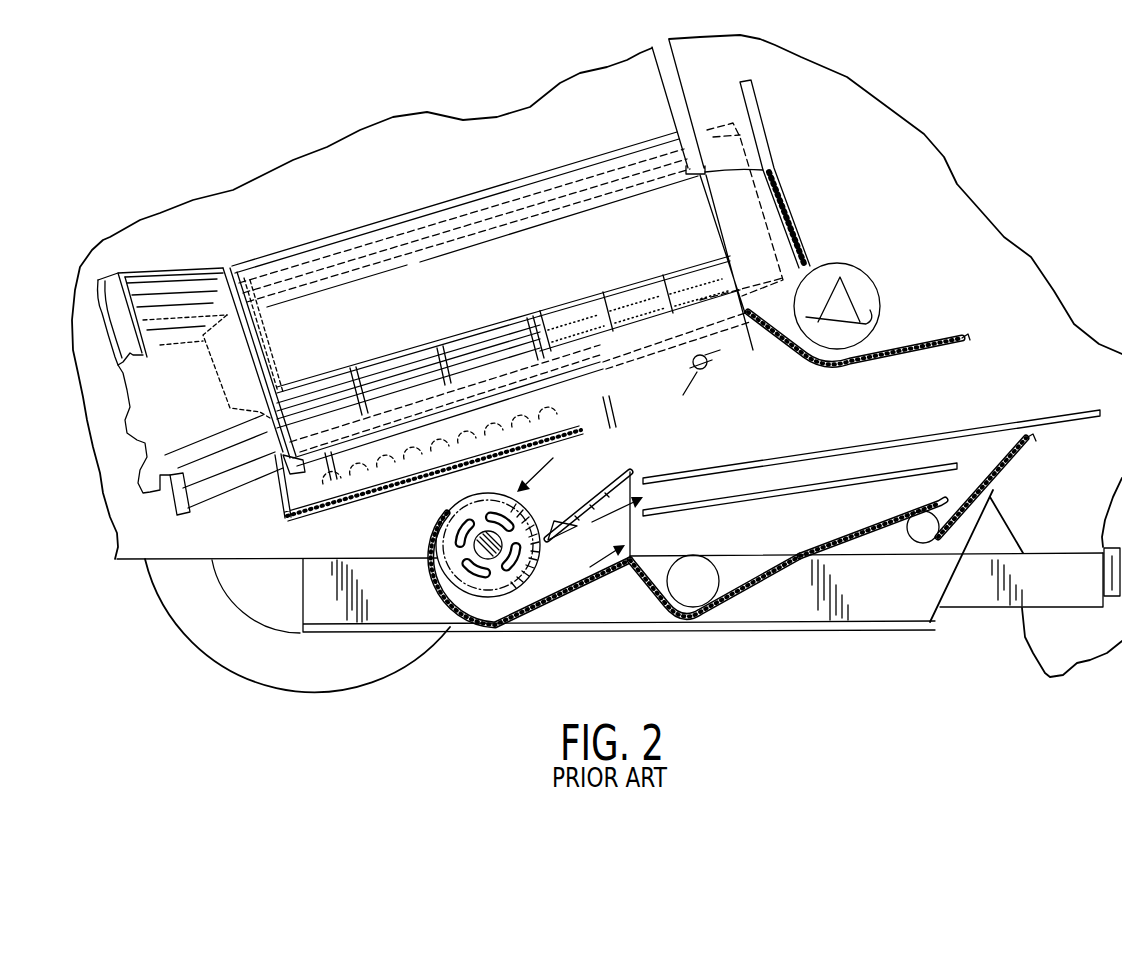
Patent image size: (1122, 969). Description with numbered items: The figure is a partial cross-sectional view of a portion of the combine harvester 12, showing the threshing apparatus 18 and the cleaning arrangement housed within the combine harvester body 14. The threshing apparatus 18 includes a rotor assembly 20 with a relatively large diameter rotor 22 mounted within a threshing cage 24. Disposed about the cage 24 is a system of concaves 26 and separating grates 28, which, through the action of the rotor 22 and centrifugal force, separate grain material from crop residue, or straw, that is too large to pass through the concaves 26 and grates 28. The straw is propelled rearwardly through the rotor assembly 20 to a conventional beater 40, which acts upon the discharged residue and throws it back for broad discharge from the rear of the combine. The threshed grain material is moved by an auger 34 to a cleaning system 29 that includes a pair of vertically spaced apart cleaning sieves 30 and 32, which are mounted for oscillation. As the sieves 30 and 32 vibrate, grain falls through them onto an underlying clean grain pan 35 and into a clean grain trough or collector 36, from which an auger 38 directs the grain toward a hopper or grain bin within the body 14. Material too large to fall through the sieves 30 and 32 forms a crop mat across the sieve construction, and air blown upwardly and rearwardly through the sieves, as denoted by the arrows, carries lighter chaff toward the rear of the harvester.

The combine harvester 12 is at (203, 180).
The combine harvester body 14 is at (850, 143).
The threshing apparatus 18 is at (385, 204).
The rotor assembly 20 is at (297, 248).
The rotor 22 is at (787, 197).
The threshing cage 24 is at (563, 166).
The concaves 26 is at (380, 377).
The separating grates 28 is at (618, 296).
The cleaning system 29 is at (748, 432).
The cleaning sieve 30 is at (967, 427).
The cleaning sieve 32 is at (927, 463).
The auger 34 is at (290, 497).
The clean grain pan 35 is at (847, 530).
The clean grain trough 36 is at (686, 614).
The auger 38 is at (707, 566).
The beater 40 is at (867, 290).